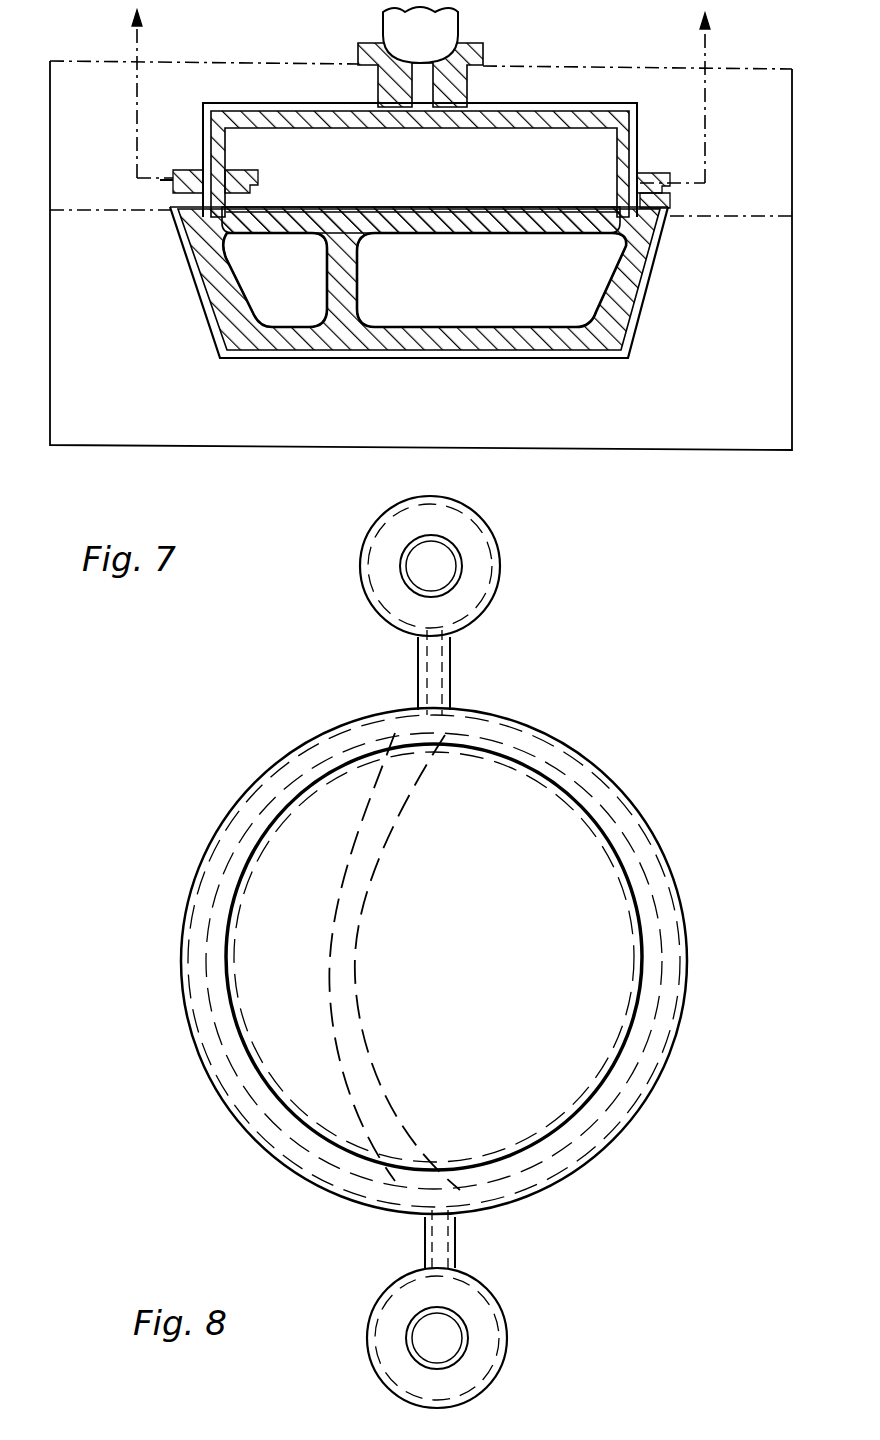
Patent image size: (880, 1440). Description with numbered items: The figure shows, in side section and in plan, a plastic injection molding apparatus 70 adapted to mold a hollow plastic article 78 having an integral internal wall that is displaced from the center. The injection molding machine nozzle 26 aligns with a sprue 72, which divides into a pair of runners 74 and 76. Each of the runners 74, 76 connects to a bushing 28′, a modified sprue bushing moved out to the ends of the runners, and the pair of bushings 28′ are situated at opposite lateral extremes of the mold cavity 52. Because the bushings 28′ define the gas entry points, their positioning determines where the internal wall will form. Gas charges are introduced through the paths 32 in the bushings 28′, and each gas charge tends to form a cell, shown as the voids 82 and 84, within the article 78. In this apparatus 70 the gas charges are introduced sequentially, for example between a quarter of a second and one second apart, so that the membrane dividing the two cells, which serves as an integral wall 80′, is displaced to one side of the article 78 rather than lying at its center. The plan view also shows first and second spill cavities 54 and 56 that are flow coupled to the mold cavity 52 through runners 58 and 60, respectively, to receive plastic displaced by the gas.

In FIG. 7, the injection molding machine nozzle 26 is at (462, 22).
In FIG. 7, the bushing 28′ is at (260, 172).
In FIG. 7, the path 32 is at (182, 172).
In FIG. 7, the mold cavity 52 is at (292, 333).
In FIG. 8, the spill cavity 54 is at (478, 560).
In FIG. 8, the spill cavity 56 is at (493, 1313).
In FIG. 8, the runner 58 is at (436, 677).
In FIG. 8, the runner 60 is at (457, 1242).
In FIG. 7, the plastic injection molding apparatus 70 is at (648, 16).
In FIG. 8, the plastic injection molding apparatus 70 is at (602, 735).
In FIG. 7, the sprue 72 is at (483, 50).
In FIG. 7, the runner 74 is at (267, 110).
In FIG. 7, the runner 76 is at (547, 107).
In FIG. 7, the hollow plastic article 78 is at (568, 342).
In FIG. 7, the integral wall 80′ is at (367, 292).
In FIG. 8, the integral wall 80′ is at (330, 912).
In FIG. 7, the void 82 is at (282, 252).
In FIG. 7, the void 84 is at (404, 246).